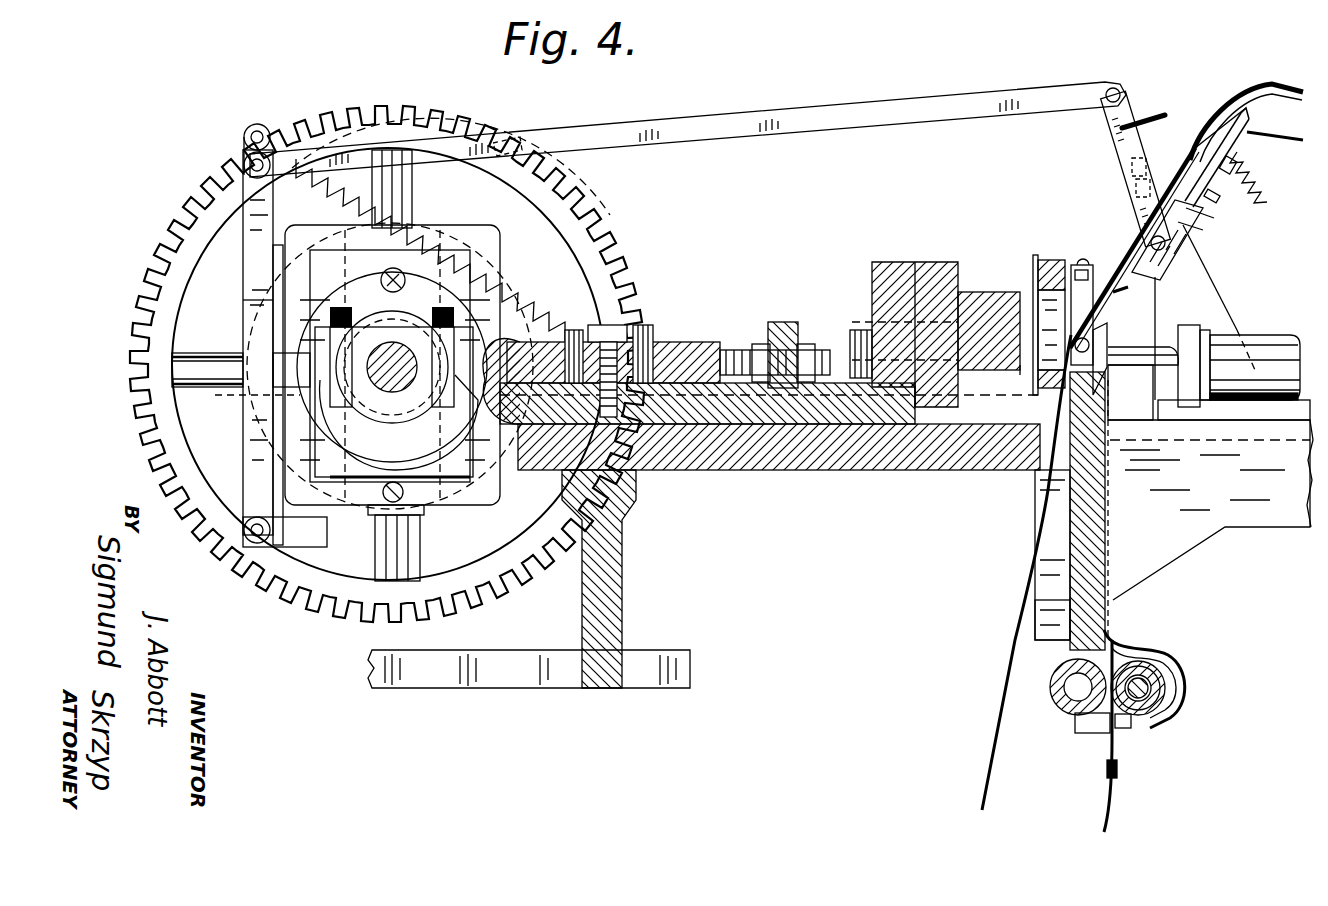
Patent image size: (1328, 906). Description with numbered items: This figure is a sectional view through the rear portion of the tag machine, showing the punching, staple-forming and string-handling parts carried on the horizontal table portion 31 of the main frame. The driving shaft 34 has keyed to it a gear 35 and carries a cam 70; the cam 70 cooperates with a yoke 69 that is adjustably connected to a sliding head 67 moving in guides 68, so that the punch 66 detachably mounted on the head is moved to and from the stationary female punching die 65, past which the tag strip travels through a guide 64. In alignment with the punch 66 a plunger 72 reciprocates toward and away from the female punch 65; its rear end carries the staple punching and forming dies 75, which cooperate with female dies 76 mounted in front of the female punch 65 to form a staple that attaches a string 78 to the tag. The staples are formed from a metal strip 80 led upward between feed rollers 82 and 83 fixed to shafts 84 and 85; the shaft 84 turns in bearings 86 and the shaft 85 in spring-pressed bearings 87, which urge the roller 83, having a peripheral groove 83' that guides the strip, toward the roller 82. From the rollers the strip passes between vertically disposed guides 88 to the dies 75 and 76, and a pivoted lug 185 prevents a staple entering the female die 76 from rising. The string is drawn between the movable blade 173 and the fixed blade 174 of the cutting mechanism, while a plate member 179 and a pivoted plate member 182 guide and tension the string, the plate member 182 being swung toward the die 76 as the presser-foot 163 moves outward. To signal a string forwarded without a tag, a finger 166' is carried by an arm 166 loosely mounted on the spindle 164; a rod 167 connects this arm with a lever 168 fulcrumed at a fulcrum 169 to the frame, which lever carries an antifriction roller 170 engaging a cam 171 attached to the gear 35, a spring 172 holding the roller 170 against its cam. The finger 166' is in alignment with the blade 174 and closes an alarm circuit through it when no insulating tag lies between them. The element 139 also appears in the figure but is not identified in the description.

The horizontal table portion 31 is at (945, 468).
The driving shaft 34 is at (380, 355).
The gear 35 is at (133, 366).
The guide 64 is at (1034, 280).
The female punching die 65 is at (1058, 266).
The punch 66 is at (972, 305).
The sliding head 67 is at (872, 287).
The guides 68 is at (927, 400).
The yoke 69 is at (463, 230).
The cam 70 is at (462, 485).
The plunger 72 is at (1262, 345).
The staple punching and forming dies 75 is at (1175, 347).
The female dies 76 is at (1106, 388).
The string 78 is at (996, 703).
The metal strip 80 is at (1108, 811).
The feed roller 82 is at (1058, 703).
The feed roller 83 is at (1160, 688).
The peripheral groove 83' is at (1160, 698).
The shaft 84 is at (1064, 718).
The shaft 85 is at (1170, 665).
The bearings 86 is at (1058, 680).
The bearings 87 is at (1118, 728).
The guides 88 is at (1087, 512).
The pin 139 is at (1018, 368).
The presser-foot 163 is at (1236, 110).
The spindle 164 is at (1206, 245).
The arm 166 is at (1119, 169).
The finger 166' is at (1152, 105).
The rod 167 is at (680, 125).
The lever 168 is at (247, 279).
The fulcrum 169 is at (242, 500).
The antifriction roller 170 is at (225, 392).
The cam 171 is at (270, 345).
The spring 172 is at (537, 318).
The movable blade 173 is at (1250, 125).
The fixed blade 174 is at (1190, 225).
The plate member 179 is at (1208, 258).
The plate member 182 is at (1095, 302).
The pivoted lug 185 is at (1117, 359).